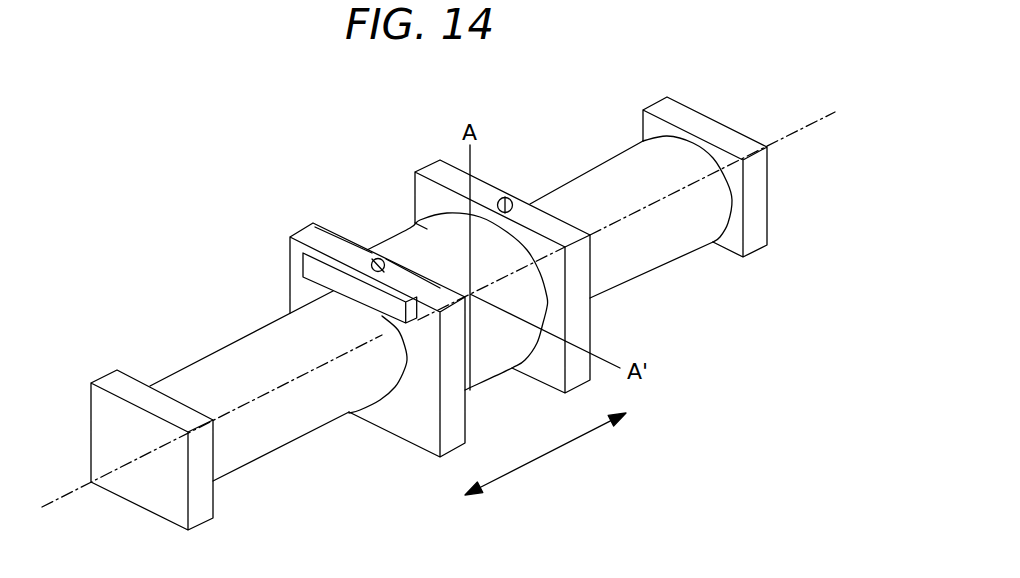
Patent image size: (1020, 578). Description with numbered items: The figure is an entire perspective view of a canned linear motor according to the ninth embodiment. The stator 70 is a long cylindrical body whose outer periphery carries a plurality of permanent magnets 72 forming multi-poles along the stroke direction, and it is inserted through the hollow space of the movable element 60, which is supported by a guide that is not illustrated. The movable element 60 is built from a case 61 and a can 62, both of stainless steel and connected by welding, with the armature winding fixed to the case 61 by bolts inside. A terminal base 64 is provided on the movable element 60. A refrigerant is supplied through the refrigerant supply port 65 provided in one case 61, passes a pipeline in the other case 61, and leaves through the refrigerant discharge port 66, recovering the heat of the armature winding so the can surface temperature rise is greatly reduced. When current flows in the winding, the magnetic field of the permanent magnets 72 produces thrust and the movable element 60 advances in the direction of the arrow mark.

The movable element 60 is at (415, 172).
The case 61 is at (440, 168).
The can 62 is at (405, 245).
The terminal base 64 is at (300, 275).
The refrigerant supply port 65 is at (312, 222).
The refrigerant discharge port 66 is at (503, 198).
The stator 70 is at (175, 368).
The permanent magnet 72 is at (285, 417).